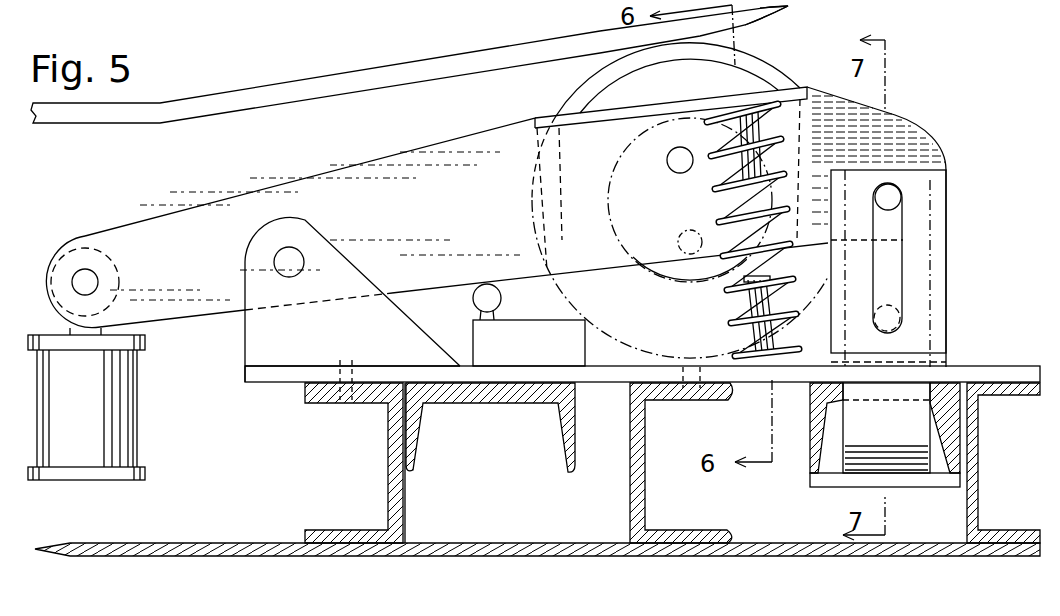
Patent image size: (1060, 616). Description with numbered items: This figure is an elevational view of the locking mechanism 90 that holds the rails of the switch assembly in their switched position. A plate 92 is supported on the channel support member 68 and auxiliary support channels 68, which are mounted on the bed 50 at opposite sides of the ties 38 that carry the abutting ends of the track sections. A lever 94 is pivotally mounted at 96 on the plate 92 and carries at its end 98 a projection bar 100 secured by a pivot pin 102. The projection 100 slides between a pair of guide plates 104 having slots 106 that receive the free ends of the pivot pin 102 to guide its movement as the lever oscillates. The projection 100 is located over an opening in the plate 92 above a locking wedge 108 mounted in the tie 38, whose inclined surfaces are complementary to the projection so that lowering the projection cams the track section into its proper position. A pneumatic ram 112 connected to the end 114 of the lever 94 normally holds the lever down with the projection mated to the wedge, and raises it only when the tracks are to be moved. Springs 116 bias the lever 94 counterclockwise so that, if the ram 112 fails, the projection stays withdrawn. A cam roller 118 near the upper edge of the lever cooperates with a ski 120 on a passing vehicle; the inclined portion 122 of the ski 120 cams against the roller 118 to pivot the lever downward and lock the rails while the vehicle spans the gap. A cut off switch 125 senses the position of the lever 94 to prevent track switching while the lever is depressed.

The tie 38 is at (418, 452).
The bed 50 is at (108, 548).
The channel support member 68 is at (392, 500).
The locking mechanism 90 is at (1028, 66).
The plate 92 is at (982, 362).
The lever 94 is at (468, 192).
The pivot 96 is at (278, 265).
The end of lever 98 is at (912, 135).
The projection bar 100 is at (918, 264).
The pivot pin 102 is at (900, 193).
The guide plates 104 is at (940, 292).
The slot 106 is at (896, 248).
The locking wedge 108 is at (905, 438).
The pneumatic ram 112 is at (128, 430).
The end of lever 114 is at (78, 256).
The springs 116 is at (806, 134).
The cam roller 118 is at (757, 72).
The ski 120 is at (98, 125).
The inclined portion 122 is at (770, 13).
The cut off switch 125 is at (546, 337).